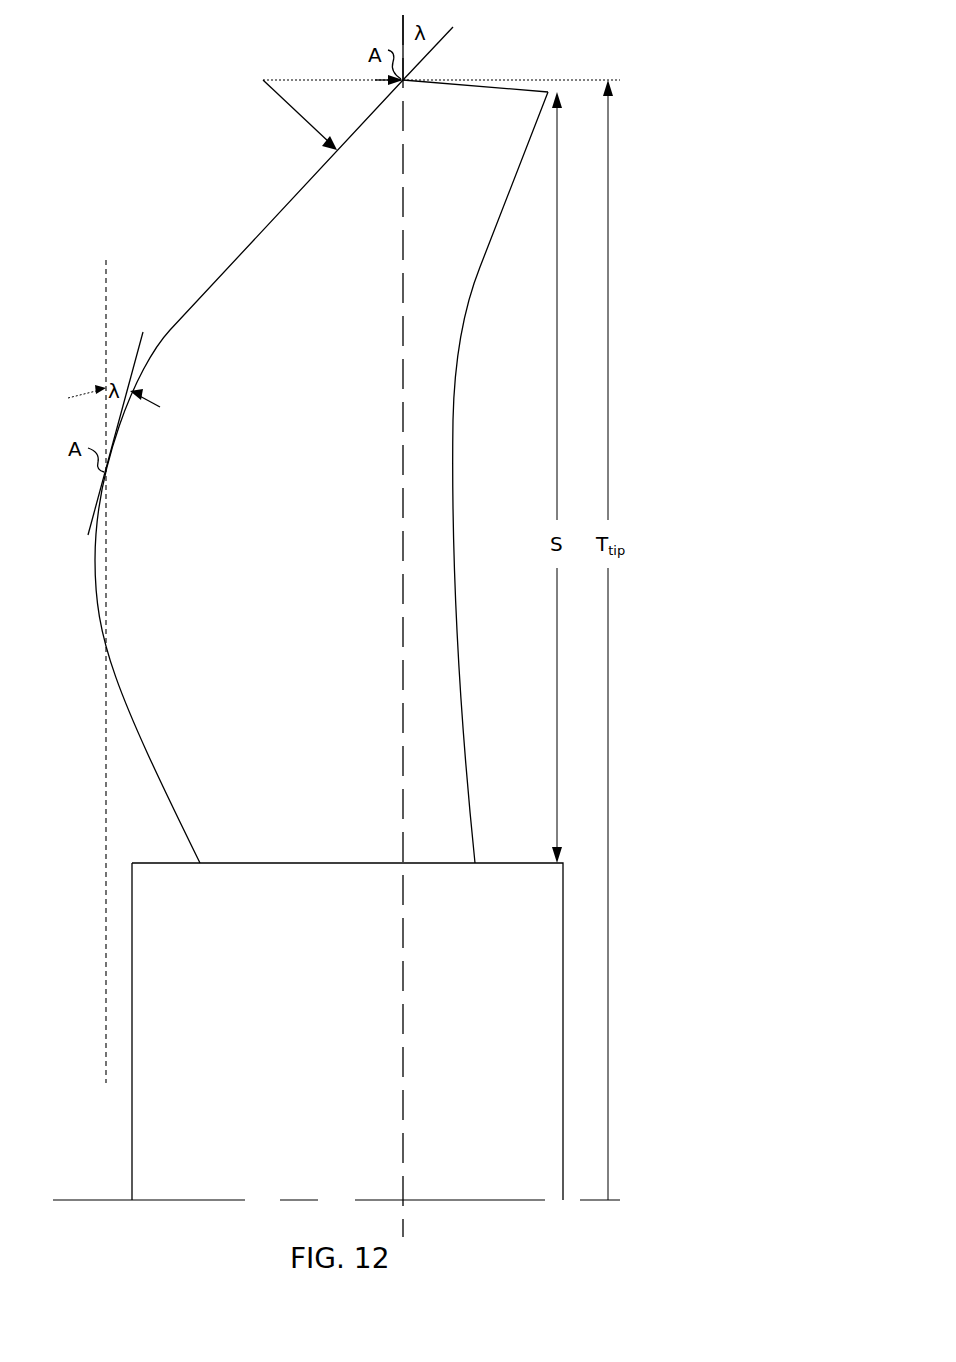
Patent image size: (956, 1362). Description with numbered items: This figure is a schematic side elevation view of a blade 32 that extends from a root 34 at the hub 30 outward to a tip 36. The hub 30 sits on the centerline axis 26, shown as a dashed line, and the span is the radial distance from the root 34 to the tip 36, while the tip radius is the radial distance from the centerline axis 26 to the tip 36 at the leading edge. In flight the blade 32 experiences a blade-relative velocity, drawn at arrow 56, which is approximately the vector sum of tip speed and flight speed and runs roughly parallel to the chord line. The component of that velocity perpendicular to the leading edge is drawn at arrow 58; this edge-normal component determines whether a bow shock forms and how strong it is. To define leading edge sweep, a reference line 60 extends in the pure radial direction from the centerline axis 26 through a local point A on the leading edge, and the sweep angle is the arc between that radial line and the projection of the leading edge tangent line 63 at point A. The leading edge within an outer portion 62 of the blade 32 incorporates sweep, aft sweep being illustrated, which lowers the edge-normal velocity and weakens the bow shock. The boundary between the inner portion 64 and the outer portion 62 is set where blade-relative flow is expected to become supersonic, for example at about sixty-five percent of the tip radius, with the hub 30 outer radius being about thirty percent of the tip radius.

The centerline axis 26 is at (583, 1200).
The hub 30 is at (502, 880).
The blade 32 is at (336, 447).
The root 34 is at (223, 862).
The tip 36 is at (525, 88).
The blade-relative velocity arrow 56 is at (441, 90).
The edge-normal velocity component arrow 58 is at (300, 120).
The reference line 60 is at (394, 27).
The outer portion 62 is at (250, 228).
The leading edge tangent line 63 is at (448, 40).
The inner portion 64 is at (166, 786).